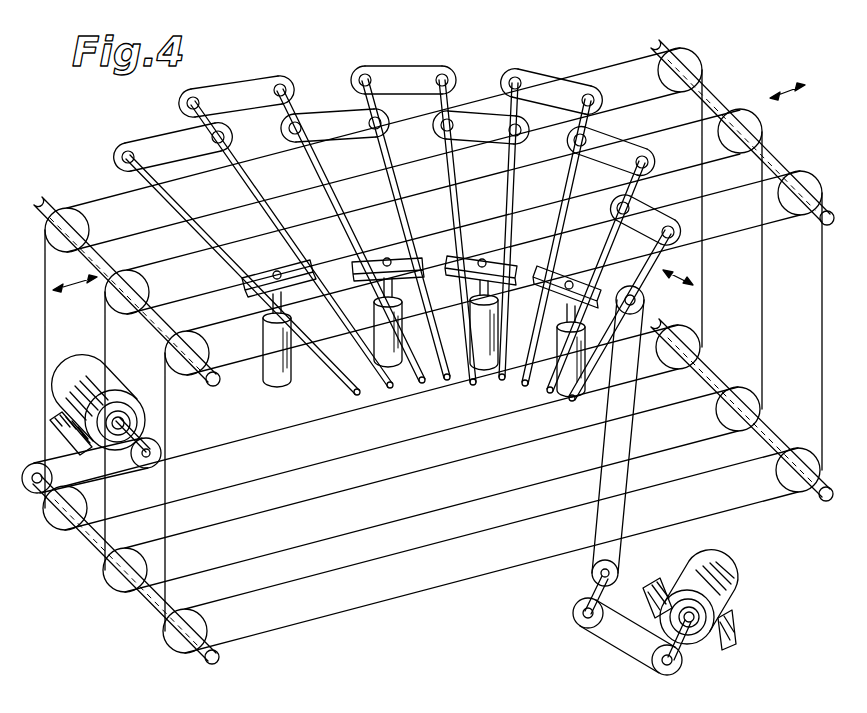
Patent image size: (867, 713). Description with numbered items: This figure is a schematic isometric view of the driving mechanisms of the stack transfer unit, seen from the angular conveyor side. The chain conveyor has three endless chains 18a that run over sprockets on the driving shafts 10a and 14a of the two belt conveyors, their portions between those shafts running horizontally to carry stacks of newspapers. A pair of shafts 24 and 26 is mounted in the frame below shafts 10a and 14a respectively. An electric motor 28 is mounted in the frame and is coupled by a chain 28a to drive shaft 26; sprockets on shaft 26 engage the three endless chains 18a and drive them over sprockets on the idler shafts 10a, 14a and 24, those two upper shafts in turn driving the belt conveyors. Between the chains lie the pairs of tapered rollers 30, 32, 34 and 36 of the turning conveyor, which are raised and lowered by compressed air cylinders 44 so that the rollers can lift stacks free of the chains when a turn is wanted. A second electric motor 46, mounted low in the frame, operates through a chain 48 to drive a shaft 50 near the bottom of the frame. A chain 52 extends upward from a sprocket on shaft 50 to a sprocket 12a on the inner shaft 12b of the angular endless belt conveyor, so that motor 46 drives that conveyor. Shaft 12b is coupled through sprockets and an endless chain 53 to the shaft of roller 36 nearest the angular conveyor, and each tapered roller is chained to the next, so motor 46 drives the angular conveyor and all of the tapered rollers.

The driving shaft 10a is at (710, 100).
The sprocket 12a is at (644, 300).
The inner shaft 12b is at (662, 250).
The driving shaft 14a is at (50, 213).
The endless chains 18a is at (255, 478).
The shaft 24 is at (775, 443).
The shaft 26 is at (150, 598).
The electric motor 28 is at (80, 372).
The chain 28a is at (142, 470).
The tapered rollers 30 is at (386, 389).
The tapered rollers 32 is at (445, 380).
The tapered rollers 34 is at (500, 380).
The tapered rollers 36 is at (550, 393).
The compressed air cylinder 44 is at (272, 380).
The electric motor 46 is at (716, 576).
The chain 48 is at (612, 644).
The shaft 50 is at (596, 580).
The chain 52 is at (597, 509).
The endless chain 53 is at (648, 212).